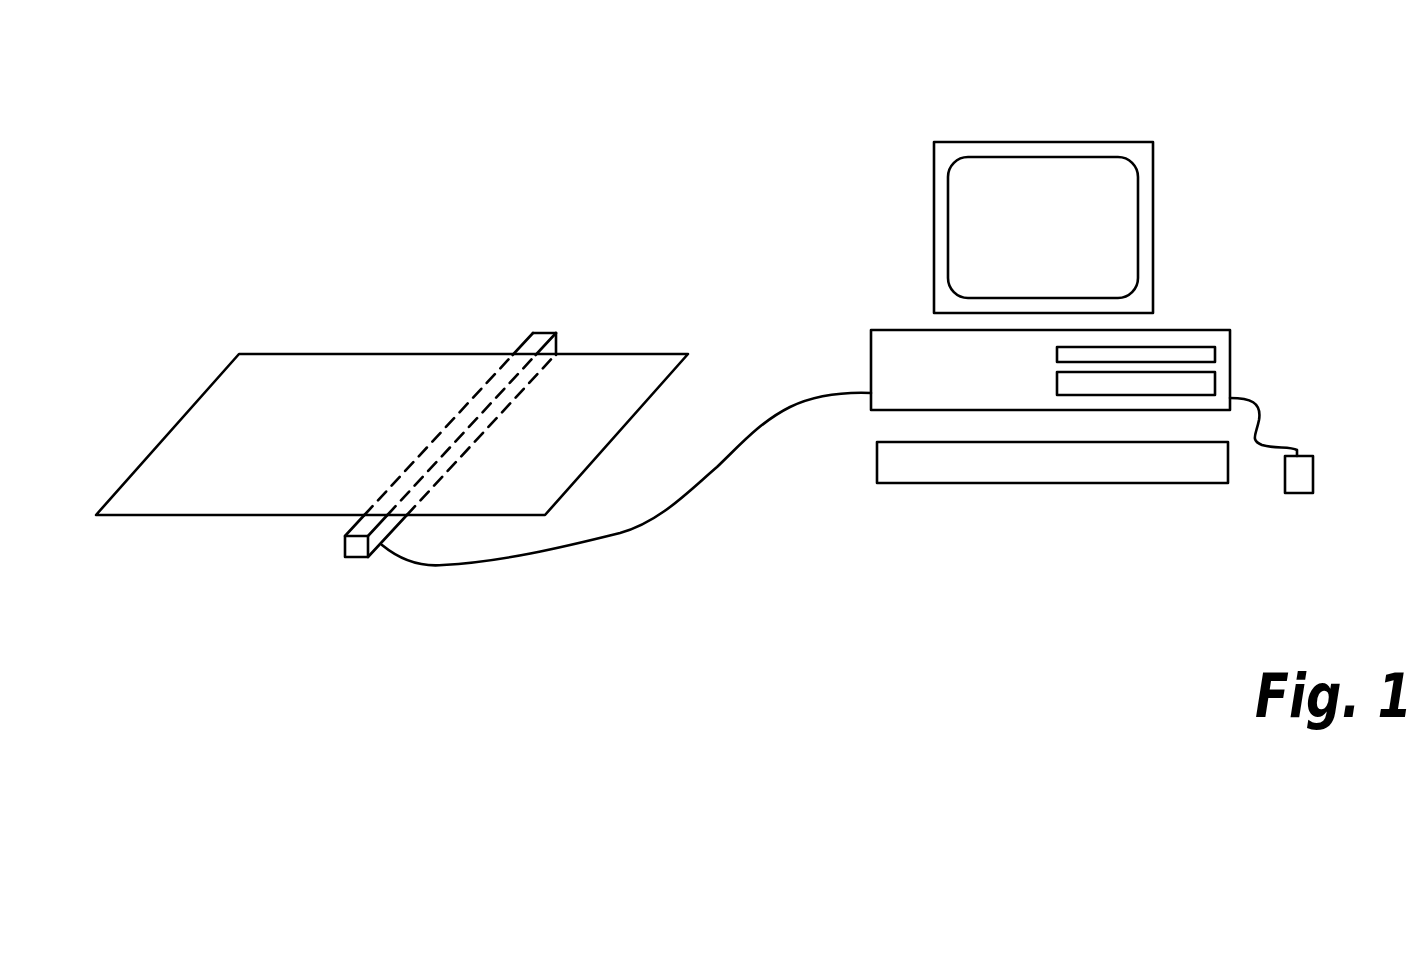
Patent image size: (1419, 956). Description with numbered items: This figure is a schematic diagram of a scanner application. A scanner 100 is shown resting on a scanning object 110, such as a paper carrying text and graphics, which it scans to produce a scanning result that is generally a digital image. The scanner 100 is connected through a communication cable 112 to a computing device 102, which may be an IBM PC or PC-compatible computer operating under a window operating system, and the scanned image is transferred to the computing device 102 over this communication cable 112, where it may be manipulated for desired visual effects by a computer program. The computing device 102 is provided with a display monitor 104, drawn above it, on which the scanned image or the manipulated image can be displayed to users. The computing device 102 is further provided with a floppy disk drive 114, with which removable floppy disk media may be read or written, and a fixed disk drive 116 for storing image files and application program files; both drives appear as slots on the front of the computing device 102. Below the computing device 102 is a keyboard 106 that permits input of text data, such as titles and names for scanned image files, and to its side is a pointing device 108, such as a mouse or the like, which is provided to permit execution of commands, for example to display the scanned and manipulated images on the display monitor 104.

The scanner 100 is at (355, 550).
The computing device 102 is at (1204, 48).
The display monitor 104 is at (1035, 167).
The keyboard 106 is at (877, 460).
The pointing device 108 is at (1305, 470).
The scanning object 110 is at (268, 369).
The communication cable 112 is at (620, 537).
The floppy disk drive 114 is at (1215, 355).
The fixed disk drive 116 is at (1215, 385).